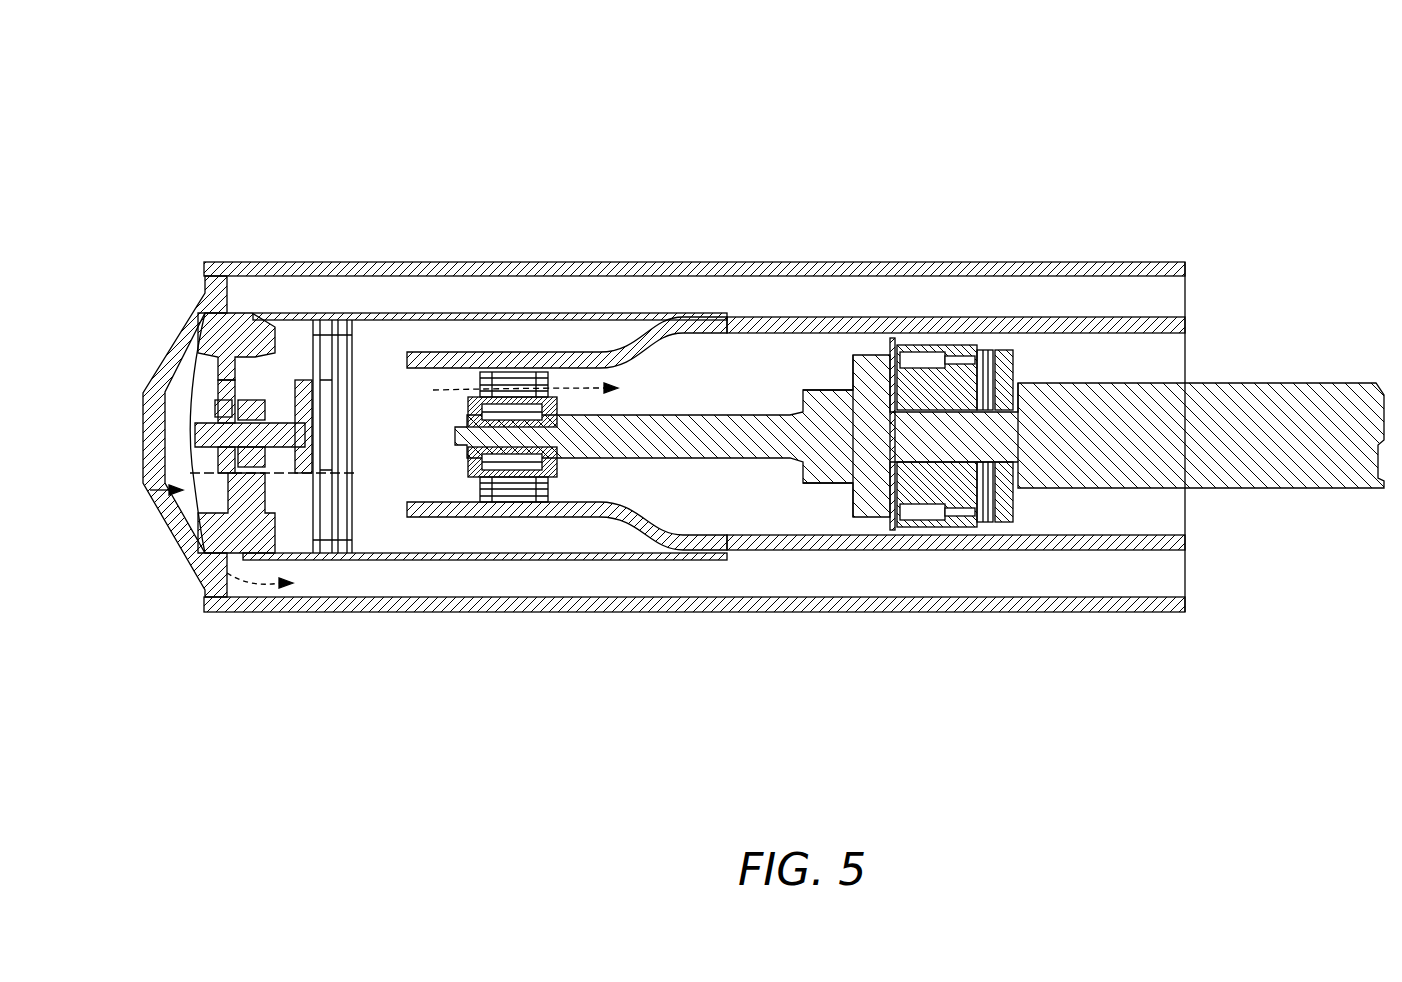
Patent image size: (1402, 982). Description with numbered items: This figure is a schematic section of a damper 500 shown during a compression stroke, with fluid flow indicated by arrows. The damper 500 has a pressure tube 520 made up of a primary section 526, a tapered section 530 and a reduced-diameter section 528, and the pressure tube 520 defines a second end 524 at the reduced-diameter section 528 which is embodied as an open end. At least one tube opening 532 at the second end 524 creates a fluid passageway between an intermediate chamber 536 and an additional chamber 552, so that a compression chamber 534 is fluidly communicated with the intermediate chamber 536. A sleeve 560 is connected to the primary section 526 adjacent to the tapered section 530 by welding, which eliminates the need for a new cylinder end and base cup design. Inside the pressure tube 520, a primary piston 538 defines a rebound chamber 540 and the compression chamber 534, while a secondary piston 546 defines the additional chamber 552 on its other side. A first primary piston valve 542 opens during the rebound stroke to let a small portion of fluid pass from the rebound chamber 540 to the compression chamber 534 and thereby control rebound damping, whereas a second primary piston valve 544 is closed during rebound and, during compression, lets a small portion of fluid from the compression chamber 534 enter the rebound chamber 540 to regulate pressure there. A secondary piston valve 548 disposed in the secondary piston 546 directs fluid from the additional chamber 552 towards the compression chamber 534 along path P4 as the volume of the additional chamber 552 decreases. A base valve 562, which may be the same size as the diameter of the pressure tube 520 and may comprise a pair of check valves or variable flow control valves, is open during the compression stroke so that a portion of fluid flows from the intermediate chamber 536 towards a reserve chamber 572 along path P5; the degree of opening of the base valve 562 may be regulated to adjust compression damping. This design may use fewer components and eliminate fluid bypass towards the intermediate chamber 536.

The damper 500 is at (1277, 72).
The pressure tube 520 is at (939, 314).
The reserve chamber 572 is at (990, 298).
The base valve 562 is at (142, 490).
The path P5 is at (168, 522).
The path P4 is at (459, 388).
The second end 524 is at (386, 358).
The tube opening 532 is at (393, 408).
The sleeve 560 is at (506, 320).
The tapered section 530 is at (648, 328).
The reduced-diameter section 528 is at (468, 512).
The primary section 526 is at (826, 326).
The compression chamber 534 is at (760, 470).
The primary piston 538 is at (840, 510).
The rebound chamber 540 is at (1055, 503).
The first primary piston valve 542 is at (897, 345).
The second primary piston valve 544 is at (937, 515).
The secondary piston valve 548 is at (534, 372).
The intermediate chamber 536 is at (531, 343).
The secondary piston 546 is at (566, 487).
The additional chamber 552 is at (418, 468).